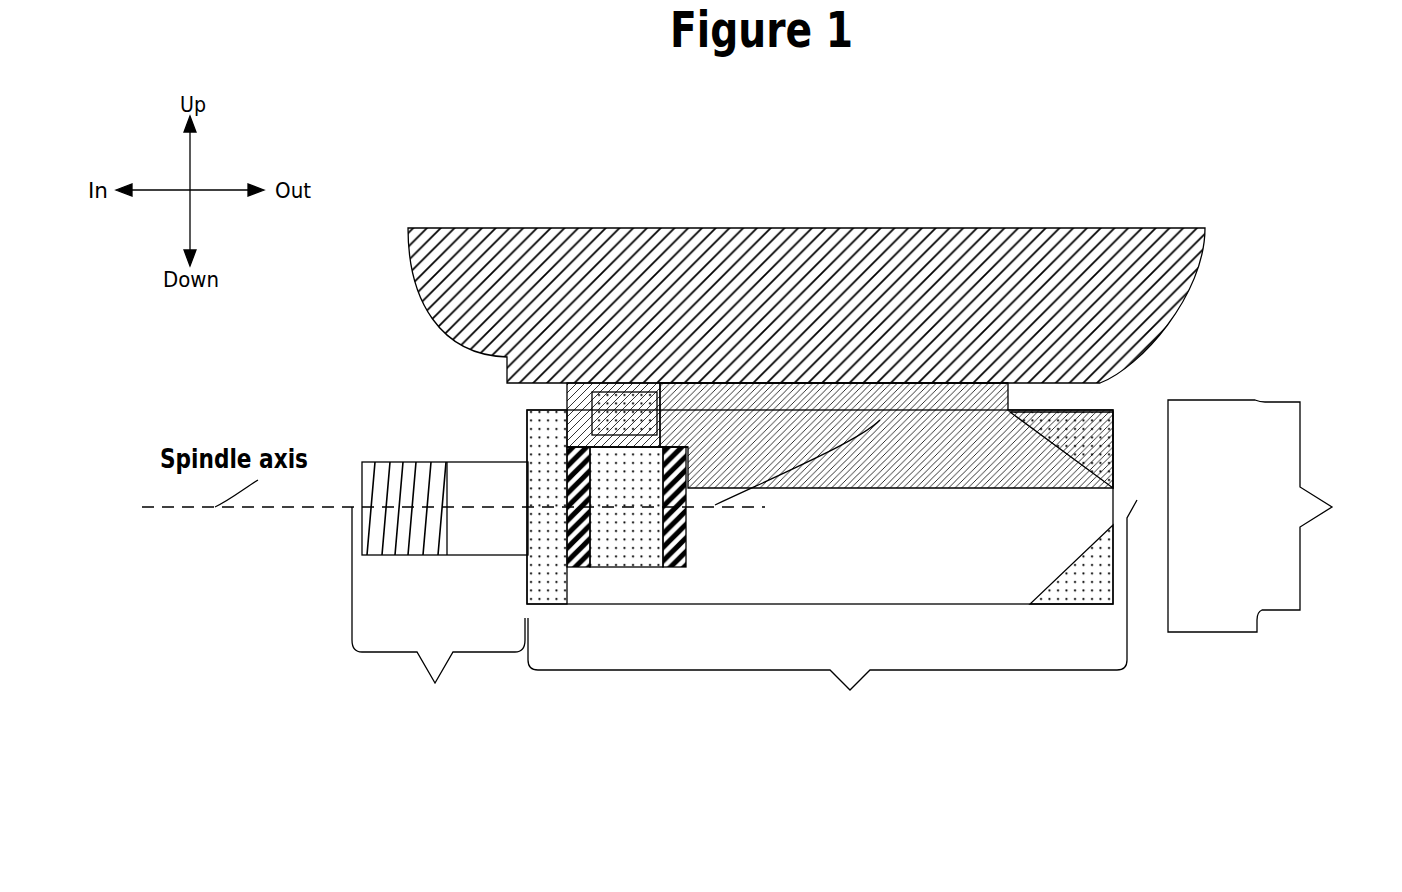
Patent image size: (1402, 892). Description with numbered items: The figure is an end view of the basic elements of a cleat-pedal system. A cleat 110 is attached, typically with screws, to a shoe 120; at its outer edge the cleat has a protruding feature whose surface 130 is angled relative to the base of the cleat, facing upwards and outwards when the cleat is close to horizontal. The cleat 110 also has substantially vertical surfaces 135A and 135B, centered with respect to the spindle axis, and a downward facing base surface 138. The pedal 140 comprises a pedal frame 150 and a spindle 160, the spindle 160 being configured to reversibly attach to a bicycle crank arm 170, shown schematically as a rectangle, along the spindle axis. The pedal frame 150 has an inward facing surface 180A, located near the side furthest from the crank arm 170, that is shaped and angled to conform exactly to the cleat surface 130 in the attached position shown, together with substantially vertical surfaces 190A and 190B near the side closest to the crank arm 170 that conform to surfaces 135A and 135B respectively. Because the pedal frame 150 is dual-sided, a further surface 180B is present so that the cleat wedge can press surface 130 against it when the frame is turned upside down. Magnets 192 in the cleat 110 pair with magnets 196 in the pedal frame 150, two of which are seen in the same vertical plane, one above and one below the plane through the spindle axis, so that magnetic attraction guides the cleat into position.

The cleat 110 is at (1033, 341).
The shoe 120 is at (1165, 235).
The surface 130 is at (1028, 442).
The substantially vertical surface 135A is at (687, 470).
The substantially vertical surface 135B is at (578, 418).
The downward facing base surface 138 is at (887, 485).
The pedal 140 is at (1281, 516).
The pedal frame 150 is at (832, 573).
The spindle 160 is at (440, 594).
The bicycle crank arm 170 is at (428, 498).
The inward facing surface 180A is at (1073, 462).
The surface 180B is at (1072, 565).
The substantially vertical surface 190A is at (685, 483).
The substantially vertical surface 190B is at (567, 424).
The magnets 192 is at (655, 408).
The magnets 196 is at (680, 487).